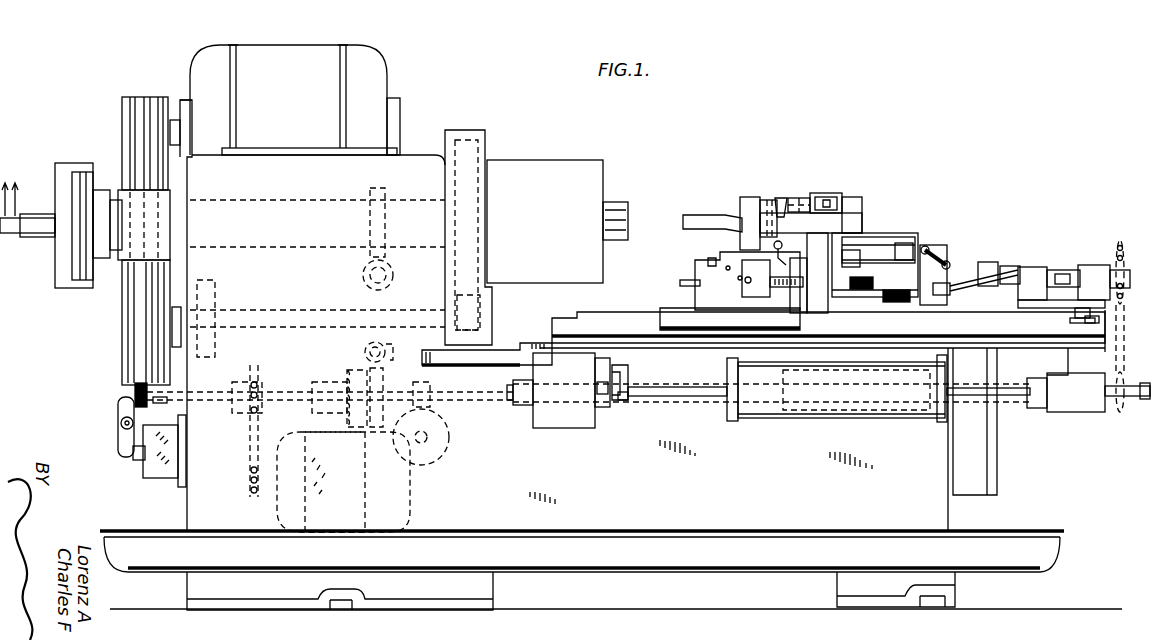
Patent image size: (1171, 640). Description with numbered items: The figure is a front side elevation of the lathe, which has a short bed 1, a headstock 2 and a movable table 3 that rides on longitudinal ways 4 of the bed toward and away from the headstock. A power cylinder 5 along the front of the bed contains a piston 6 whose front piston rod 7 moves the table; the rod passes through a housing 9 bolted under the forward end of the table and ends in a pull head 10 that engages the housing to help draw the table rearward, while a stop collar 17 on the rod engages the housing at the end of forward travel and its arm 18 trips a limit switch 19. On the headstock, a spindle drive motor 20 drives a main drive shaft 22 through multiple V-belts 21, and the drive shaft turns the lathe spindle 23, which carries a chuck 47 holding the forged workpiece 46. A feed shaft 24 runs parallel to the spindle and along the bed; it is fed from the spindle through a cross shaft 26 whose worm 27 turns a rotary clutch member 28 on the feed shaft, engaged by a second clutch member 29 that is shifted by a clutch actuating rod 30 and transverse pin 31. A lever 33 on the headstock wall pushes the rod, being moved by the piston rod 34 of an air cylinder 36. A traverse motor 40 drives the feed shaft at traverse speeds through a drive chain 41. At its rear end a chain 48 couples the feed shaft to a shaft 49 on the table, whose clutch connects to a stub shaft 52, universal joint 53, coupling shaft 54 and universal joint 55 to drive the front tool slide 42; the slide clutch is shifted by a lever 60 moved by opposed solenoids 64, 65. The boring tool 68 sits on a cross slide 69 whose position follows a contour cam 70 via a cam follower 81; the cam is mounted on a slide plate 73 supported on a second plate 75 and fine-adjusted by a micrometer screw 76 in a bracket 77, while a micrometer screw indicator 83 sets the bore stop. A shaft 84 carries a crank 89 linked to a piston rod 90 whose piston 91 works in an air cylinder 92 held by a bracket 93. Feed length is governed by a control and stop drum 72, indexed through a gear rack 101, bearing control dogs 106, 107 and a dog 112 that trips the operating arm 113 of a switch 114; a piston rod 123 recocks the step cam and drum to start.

The bed 1 is at (187, 500).
The headstock 2 is at (418, 142).
The table 3 is at (614, 320).
The longitudinal ways 4 is at (530, 344).
The power cylinder 5 is at (893, 404).
The piston 6 is at (796, 410).
The front piston rod 7 is at (678, 398).
The housing 9 is at (582, 420).
The pull head 10 is at (516, 405).
The stop collar 17 is at (622, 400).
The arm 18 is at (628, 376).
The limit switch 19 is at (595, 370).
The spindle drive motor 20 is at (280, 58).
The multiple V-belts 21 is at (122, 152).
The main drive shaft 22 is at (172, 330).
The lathe spindle 23 is at (299, 198).
The feed shaft 24 is at (1016, 400).
The cross shaft 26 is at (366, 348).
The worm 27 is at (388, 346).
The rotary clutch member 28 is at (383, 376).
The second clutch member 29 is at (352, 370).
The clutch actuating rod 30 is at (135, 392).
The transverse pin 31 is at (322, 382).
The lever 33 is at (118, 412).
The piston rod 34 is at (135, 460).
The air cylinder 36 is at (154, 478).
The traverse motor 40 is at (290, 510).
The drive chain 41 is at (248, 448).
The front tool slide 42 is at (799, 264).
The workpiece 46 is at (618, 202).
The chuck 47 is at (590, 160).
The chain 48 is at (1127, 358).
The shaft 49 is at (1131, 258).
The stub shaft 52 is at (1010, 257).
The universal joint 53 is at (988, 248).
The coupling shaft 54 is at (984, 260).
The universal joint 55 is at (896, 311).
The lever 60 is at (1063, 256).
The electro-magnetic solenoid 64 is at (1044, 295).
The electro-magnetic solenoid 65 is at (1104, 263).
The boring tool 68 is at (709, 204).
The cross slide 69 is at (788, 185).
The contour cam 70 is at (730, 282).
The control and stop drum 72 is at (876, 250).
The slide plate 73 is at (678, 256).
The second plate 75 is at (786, 293).
The micrometer screw 76 is at (702, 270).
The bracket 77 is at (681, 290).
The cam follower 81 is at (756, 278).
The micrometer screw indicator 83 is at (788, 258).
The shaft 84 is at (742, 212).
The crank 89 is at (761, 201).
The piston rod 90 is at (803, 190).
The piston 91 is at (845, 188).
The air cylinder 92 is at (827, 184).
The bracket 93 is at (824, 215).
The gear rack 101 is at (822, 274).
The control dog 106 is at (847, 263).
The control dog 107 is at (899, 264).
The dog 112 is at (937, 257).
The operating arm 113 is at (941, 247).
The switch 114 is at (950, 295).
The piston rod 123 is at (856, 305).